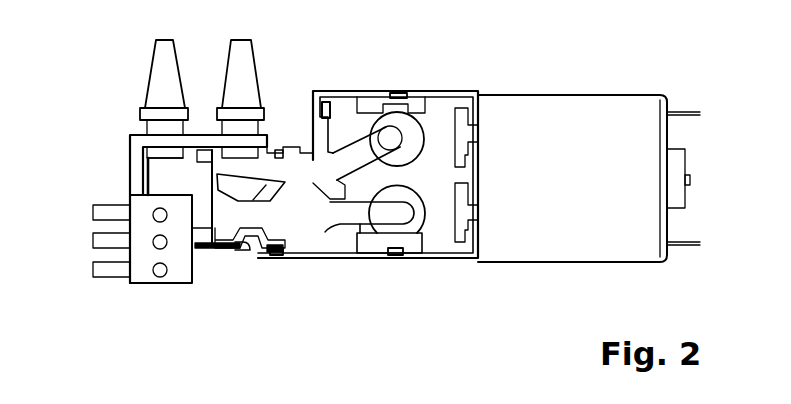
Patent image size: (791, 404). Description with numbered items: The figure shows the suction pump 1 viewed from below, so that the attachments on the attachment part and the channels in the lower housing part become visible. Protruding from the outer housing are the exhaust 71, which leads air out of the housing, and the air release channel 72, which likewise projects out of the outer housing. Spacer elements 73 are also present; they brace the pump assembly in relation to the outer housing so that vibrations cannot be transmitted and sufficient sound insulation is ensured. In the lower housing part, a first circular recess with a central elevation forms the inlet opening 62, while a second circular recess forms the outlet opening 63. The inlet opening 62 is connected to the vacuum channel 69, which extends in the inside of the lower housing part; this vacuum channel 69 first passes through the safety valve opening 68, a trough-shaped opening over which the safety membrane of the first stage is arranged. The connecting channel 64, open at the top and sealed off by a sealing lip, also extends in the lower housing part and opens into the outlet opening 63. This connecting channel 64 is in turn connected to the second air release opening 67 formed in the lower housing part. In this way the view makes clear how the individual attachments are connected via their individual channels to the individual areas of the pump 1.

The electric motor 1 is at (570, 174).
The inlet opening 62 is at (403, 101).
The outlet opening 63 is at (420, 235).
The connecting channel 64 is at (353, 158).
The second air release opening 67 is at (240, 250).
The safety valve opening 68 is at (313, 228).
The vacuum channel 69 is at (272, 249).
The exhaust 71 is at (258, 90).
The air release channel 72 is at (163, 71).
The spacer elements 73 is at (113, 217).